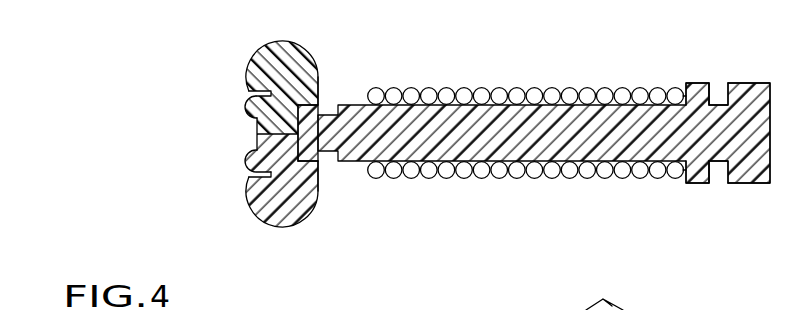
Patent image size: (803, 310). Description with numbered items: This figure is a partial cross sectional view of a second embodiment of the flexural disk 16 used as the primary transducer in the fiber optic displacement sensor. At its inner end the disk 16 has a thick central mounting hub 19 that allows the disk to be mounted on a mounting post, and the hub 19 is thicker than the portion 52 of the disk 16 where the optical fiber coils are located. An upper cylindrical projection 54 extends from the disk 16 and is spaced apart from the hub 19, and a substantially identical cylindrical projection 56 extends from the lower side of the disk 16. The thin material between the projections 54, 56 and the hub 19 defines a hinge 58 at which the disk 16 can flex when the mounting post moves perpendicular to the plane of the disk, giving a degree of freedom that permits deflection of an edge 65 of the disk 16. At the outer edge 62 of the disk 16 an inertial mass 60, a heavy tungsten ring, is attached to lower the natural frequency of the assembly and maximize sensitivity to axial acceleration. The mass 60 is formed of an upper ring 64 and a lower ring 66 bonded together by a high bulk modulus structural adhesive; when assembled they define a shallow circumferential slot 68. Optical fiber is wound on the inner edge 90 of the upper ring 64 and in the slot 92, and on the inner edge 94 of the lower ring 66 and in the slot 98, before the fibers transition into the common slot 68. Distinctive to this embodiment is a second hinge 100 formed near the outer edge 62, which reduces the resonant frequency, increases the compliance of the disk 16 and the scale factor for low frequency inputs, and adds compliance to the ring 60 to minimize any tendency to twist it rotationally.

The inertial mass 60 is at (140, 111).
The upper ring 64 is at (276, 42).
The lower ring 66 is at (272, 230).
The shallow slot 68 is at (228, 133).
The outer edge 62 is at (231, 152).
The slot 92 is at (228, 92).
The slot 98 is at (228, 180).
The inner edge 90 is at (319, 72).
The inner edge 94 is at (321, 192).
The second hinge 100 is at (326, 105).
The flexural disk 16 is at (372, 164).
The portion 52 is at (522, 196).
The upper cylindrical projection 54 is at (699, 83).
The cylindrical projection 56 is at (697, 183).
The hinge 58 is at (720, 80).
The mounting hub 19 is at (743, 183).
The edge 65 is at (655, 66).